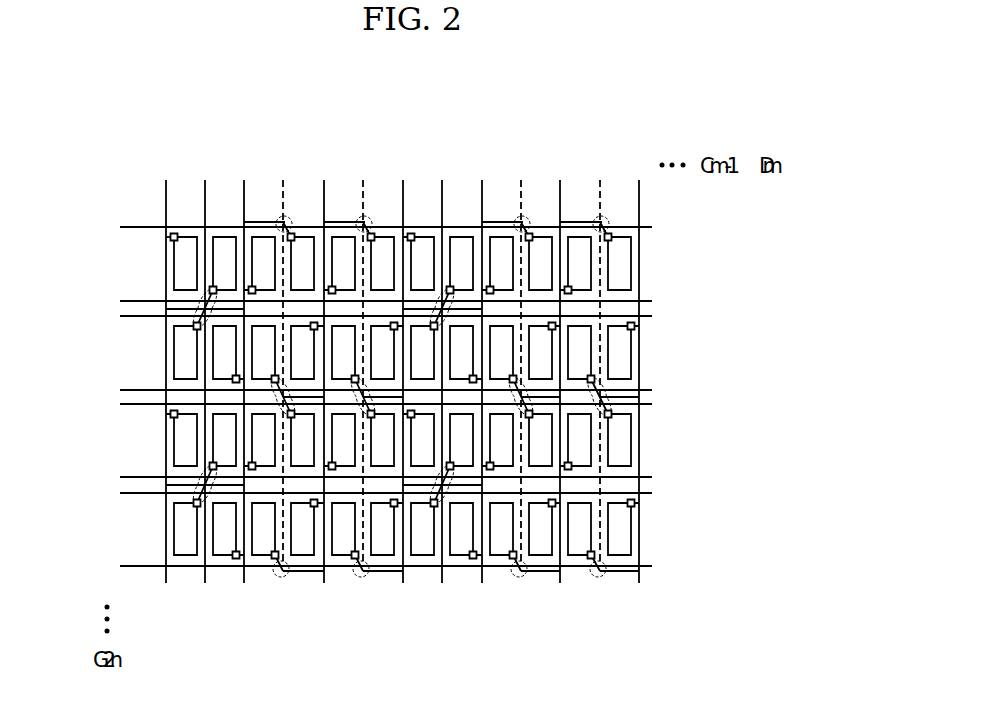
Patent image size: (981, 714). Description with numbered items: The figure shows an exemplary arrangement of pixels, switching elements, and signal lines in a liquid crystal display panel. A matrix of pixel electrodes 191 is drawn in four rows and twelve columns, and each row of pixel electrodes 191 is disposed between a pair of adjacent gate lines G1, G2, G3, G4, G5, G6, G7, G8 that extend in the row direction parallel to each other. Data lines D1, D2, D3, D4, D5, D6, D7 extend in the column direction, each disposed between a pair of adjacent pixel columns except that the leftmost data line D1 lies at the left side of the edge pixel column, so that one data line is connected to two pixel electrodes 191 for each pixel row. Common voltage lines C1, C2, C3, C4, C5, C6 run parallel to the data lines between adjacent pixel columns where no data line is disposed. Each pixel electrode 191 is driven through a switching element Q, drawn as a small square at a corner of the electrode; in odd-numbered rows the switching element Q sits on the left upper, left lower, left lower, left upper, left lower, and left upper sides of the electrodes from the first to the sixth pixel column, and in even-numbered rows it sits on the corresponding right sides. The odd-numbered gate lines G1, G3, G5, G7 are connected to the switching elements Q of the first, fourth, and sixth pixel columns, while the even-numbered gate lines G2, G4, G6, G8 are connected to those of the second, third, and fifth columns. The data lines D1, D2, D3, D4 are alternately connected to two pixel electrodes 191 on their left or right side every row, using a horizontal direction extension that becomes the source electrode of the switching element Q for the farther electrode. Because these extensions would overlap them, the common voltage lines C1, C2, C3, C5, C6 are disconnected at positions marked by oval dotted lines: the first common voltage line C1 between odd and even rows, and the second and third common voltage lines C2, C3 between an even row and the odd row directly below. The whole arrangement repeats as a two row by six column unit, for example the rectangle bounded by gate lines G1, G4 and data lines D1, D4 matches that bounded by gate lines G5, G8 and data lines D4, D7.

The pixel electrode 191 is at (173, 263).
The switching element Q is at (172, 236).
The first gate line G1 is at (372, 228).
The second gate line G2 is at (372, 302).
The third gate line G3 is at (372, 317).
The fourth gate line G4 is at (372, 391).
The fifth gate line G5 is at (372, 405).
The sixth gate line G6 is at (372, 478).
The seventh gate line G7 is at (372, 494).
The eighth gate line G8 is at (372, 567).
The first data line D1 is at (166, 368).
The second data line D2 is at (244, 368).
The third data line D3 is at (324, 368).
The fourth data line D4 is at (403, 368).
The fifth data line D5 is at (482, 368).
The sixth data line D6 is at (560, 368).
The seventh data line D7 is at (639, 368).
The first common voltage line C1 is at (205, 368).
The second common voltage line C2 is at (283, 360).
The third common voltage line C3 is at (363, 360).
The fourth common voltage line C4 is at (442, 368).
The fifth common voltage line C5 is at (521, 360).
The sixth common voltage line C6 is at (600, 360).